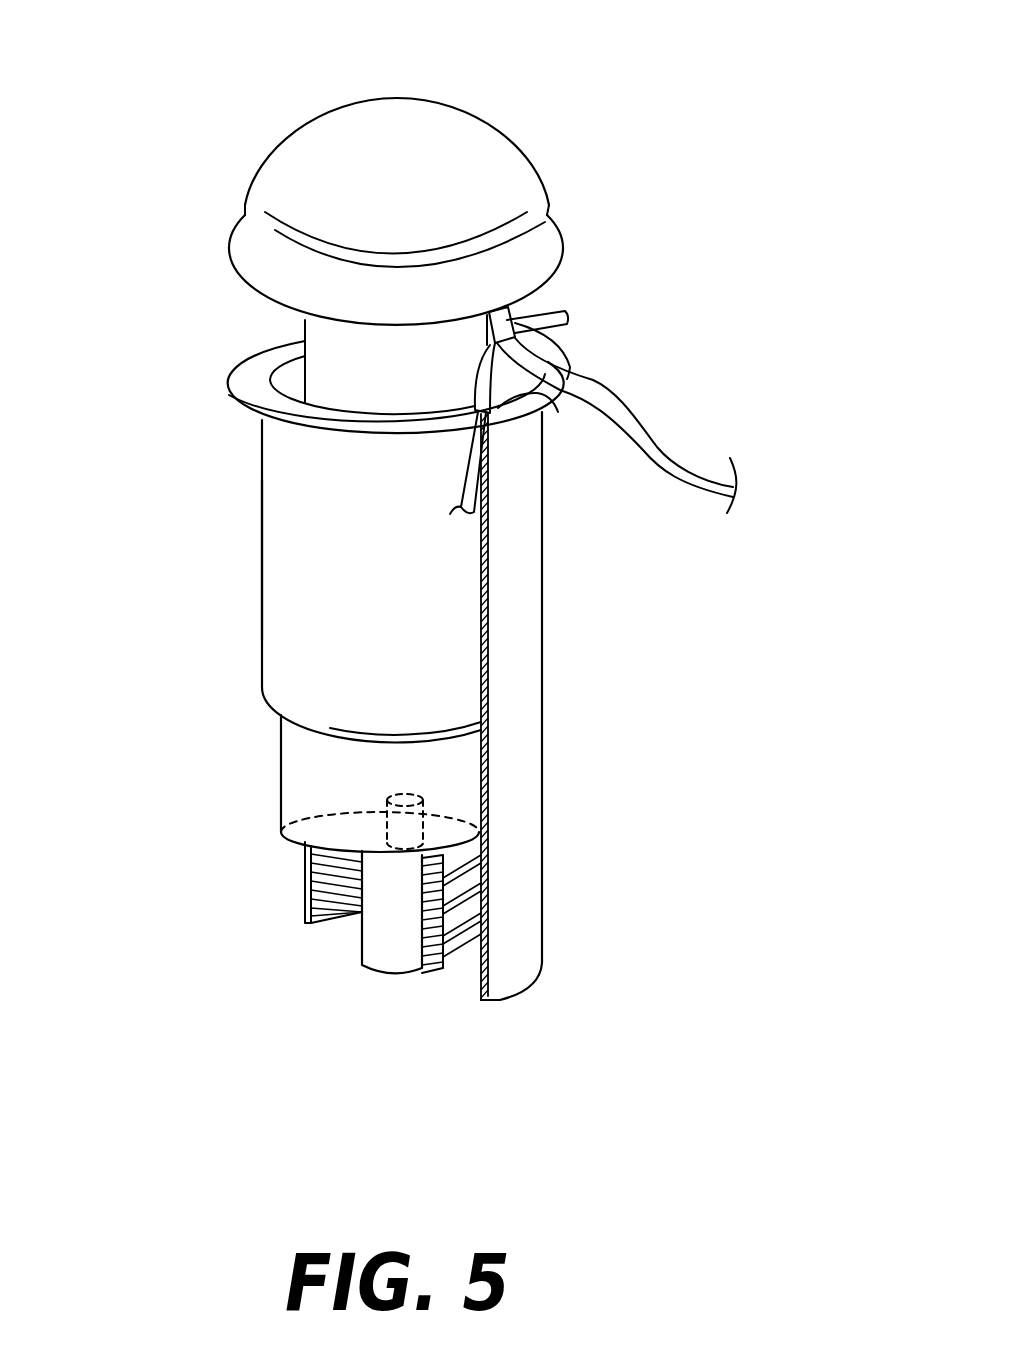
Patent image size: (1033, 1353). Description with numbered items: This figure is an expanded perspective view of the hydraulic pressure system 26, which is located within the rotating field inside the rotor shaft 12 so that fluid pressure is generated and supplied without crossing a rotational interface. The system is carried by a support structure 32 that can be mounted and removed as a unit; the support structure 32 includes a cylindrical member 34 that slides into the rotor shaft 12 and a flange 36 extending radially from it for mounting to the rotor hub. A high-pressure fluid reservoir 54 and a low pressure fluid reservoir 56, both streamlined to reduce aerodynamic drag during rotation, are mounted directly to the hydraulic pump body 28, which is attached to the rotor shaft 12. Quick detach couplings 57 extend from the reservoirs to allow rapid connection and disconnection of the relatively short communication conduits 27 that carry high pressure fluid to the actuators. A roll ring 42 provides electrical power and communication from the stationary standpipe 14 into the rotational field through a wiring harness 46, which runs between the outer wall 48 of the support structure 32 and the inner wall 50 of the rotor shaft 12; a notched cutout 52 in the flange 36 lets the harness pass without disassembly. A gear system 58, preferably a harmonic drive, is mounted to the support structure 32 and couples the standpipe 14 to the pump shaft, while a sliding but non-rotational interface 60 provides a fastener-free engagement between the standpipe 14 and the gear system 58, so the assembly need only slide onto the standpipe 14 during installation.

The rotor shaft 12 is at (528, 909).
The rotor standpipe 14 is at (394, 962).
The hydraulic pressure system 26 is at (718, 126).
The communication conduits 27 is at (660, 443).
The hydraulic pump body 28 is at (303, 316).
The support structure 32 is at (303, 625).
The cylindrical member 34 is at (277, 685).
The flange 36 is at (246, 378).
The roll ring 42 is at (325, 918).
The wiring harness 46 is at (568, 318).
The outer wall 48 is at (380, 570).
The inner wall 50 is at (480, 648).
The notched cutout 52 is at (545, 405).
The high-pressure fluid reservoir 54 is at (397, 115).
The low pressure fluid reservoir 56 is at (244, 243).
The quick detach couplings 57 is at (509, 317).
The gear system 58 is at (297, 762).
The non-rotational interface 60 is at (283, 833).